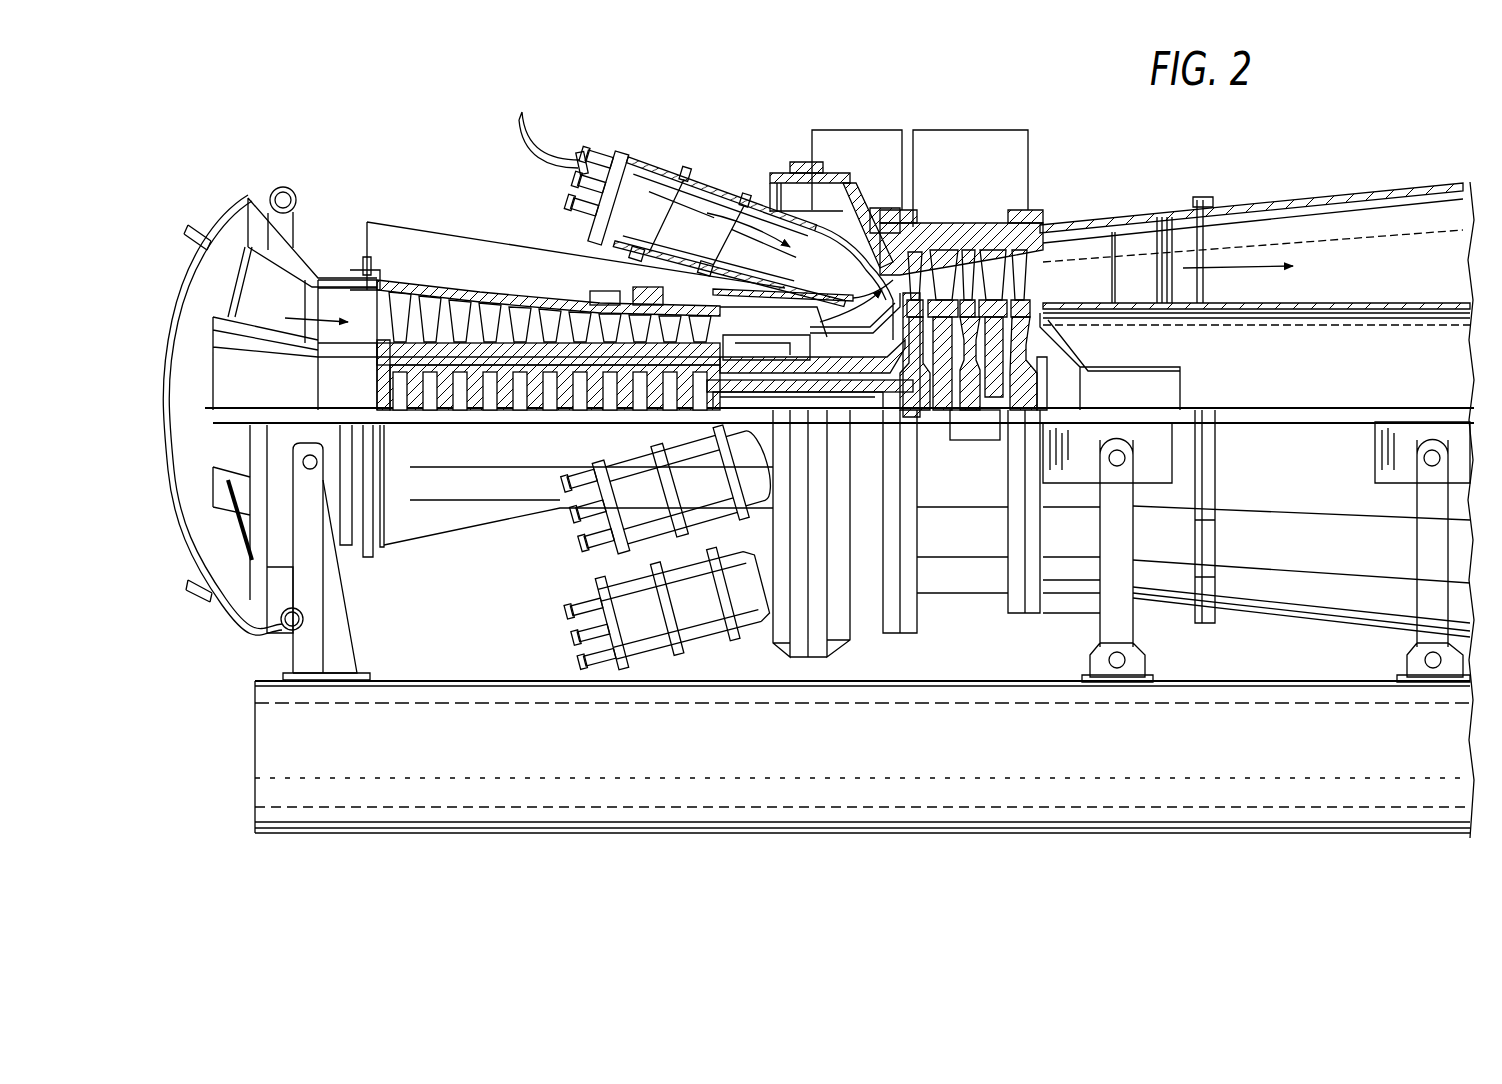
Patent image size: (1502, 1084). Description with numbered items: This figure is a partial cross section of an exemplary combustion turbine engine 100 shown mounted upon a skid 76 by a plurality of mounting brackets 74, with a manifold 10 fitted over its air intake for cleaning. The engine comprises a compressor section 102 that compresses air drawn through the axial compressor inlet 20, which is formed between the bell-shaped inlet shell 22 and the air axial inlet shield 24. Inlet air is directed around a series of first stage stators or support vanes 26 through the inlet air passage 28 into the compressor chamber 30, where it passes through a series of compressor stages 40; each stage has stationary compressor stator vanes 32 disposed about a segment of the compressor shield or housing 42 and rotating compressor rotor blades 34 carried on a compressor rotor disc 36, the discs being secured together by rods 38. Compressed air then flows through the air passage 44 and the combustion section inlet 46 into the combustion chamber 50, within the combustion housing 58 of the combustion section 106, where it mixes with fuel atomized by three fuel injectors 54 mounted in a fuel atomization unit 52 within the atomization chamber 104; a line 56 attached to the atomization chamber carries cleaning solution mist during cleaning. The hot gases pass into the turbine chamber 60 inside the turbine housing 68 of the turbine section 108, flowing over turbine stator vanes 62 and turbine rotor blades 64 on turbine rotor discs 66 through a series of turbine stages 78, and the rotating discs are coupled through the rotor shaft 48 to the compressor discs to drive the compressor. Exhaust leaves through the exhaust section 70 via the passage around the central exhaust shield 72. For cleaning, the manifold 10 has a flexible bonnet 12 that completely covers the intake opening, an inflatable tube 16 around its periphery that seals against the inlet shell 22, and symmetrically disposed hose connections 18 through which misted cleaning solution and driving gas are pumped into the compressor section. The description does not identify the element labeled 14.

The manifold 10 is at (227, 630).
The bonnet 12 is at (181, 318).
The strut 14 is at (298, 222).
The tube 16 is at (284, 188).
The hose connections 18 is at (199, 218).
The axial compressor inlet 20 is at (230, 520).
The bell-shaped inlet shell 22 is at (243, 212).
The air axial inlet shield 24 is at (220, 317).
The first stage stators or support vanes 26 is at (288, 287).
The inlet air passage 28 is at (362, 303).
The compressor chamber 30 is at (500, 313).
The compressor stator vanes 32 is at (457, 310).
The compressor rotor blades 34 is at (413, 320).
The compressor rotor disc 36 is at (513, 407).
The rods 38 is at (467, 410).
The compressor stages 40 is at (592, 299).
The compressor housing 42 is at (443, 523).
The air passage 44 is at (760, 313).
The combustion section inlet 46 is at (812, 331).
The rotor shaft 48 is at (840, 395).
The combustion chamber 50 is at (833, 230).
The fuel atomization unit 52 is at (600, 577).
The fuel injectors 54 is at (572, 212).
The line 56 is at (540, 110).
The combustion housing 58 is at (852, 633).
The turbine chamber 60 is at (980, 280).
The turbine stator vanes 62 is at (943, 273).
The turbine rotor blades 64 is at (1027, 278).
The turbine rotor discs 66 is at (1032, 358).
The turbine housing 68 is at (960, 590).
The exhaust section 70 is at (1357, 190).
The central exhaust shield 72 is at (1307, 312).
The mounting brackets 74 is at (350, 631).
The skid 76 is at (503, 684).
The turbine stages 78 is at (978, 437).
The combustion turbine engine 100 is at (889, 75).
The compressor section 102 is at (407, 227).
The atomization chamber 104 is at (693, 177).
The combustion section 106 is at (860, 130).
The turbine section 108 is at (972, 130).